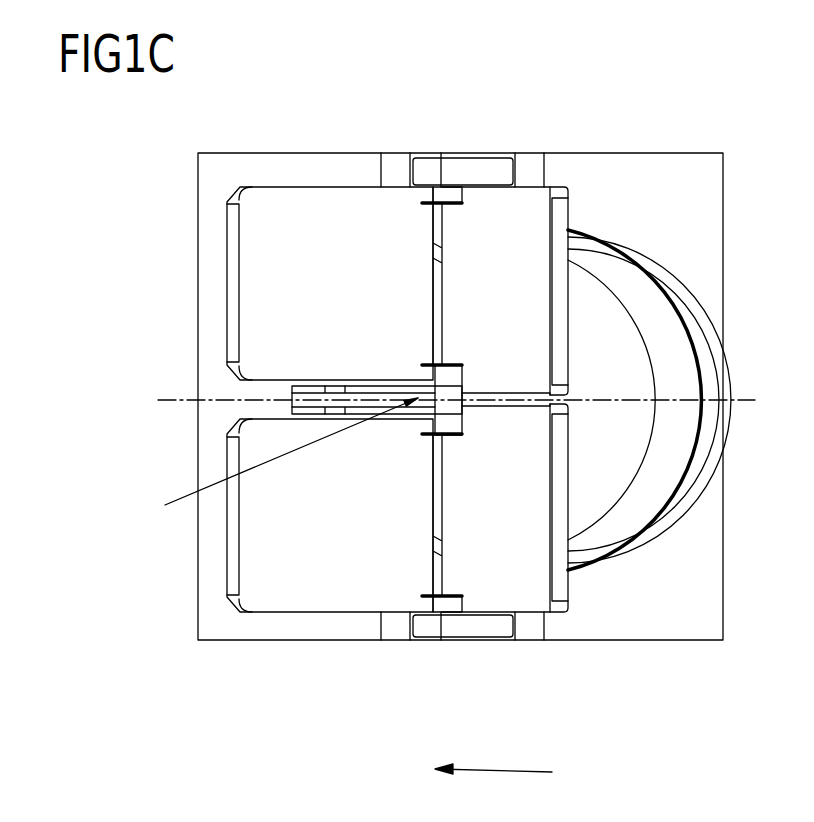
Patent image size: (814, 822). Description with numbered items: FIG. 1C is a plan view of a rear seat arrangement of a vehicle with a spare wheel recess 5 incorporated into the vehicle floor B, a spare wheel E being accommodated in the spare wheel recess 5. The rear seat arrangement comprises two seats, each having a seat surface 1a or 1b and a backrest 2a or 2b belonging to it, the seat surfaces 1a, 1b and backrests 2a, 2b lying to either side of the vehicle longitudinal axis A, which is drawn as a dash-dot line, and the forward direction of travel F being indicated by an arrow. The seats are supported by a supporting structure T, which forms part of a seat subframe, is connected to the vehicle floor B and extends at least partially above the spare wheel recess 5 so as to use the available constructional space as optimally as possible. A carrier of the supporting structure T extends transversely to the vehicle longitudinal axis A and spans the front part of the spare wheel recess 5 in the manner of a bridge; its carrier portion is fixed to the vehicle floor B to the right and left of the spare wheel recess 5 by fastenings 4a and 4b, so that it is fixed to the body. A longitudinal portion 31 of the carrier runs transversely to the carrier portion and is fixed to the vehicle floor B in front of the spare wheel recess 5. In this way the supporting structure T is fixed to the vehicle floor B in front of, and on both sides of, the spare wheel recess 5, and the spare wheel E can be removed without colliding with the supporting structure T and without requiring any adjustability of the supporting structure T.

The seat surface 1a is at (253, 537).
The seat surface 1b is at (270, 242).
The backrest 2a is at (500, 595).
The backrest 2b is at (485, 208).
The fastening 4a is at (425, 628).
The fastening 4b is at (452, 170).
The spare wheel recess 5 is at (600, 235).
The longitudinal portion 31 is at (302, 395).
The vehicle longitudinal axis A is at (737, 398).
The vehicle floor B is at (698, 202).
The spare wheel E is at (617, 487).
The direction of travel F is at (493, 757).
The supporting structure T is at (282, 457).